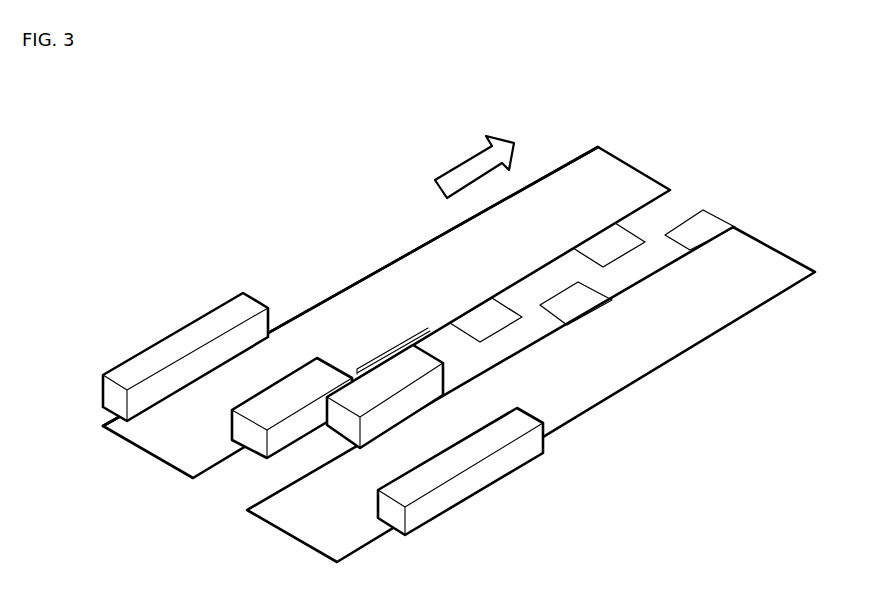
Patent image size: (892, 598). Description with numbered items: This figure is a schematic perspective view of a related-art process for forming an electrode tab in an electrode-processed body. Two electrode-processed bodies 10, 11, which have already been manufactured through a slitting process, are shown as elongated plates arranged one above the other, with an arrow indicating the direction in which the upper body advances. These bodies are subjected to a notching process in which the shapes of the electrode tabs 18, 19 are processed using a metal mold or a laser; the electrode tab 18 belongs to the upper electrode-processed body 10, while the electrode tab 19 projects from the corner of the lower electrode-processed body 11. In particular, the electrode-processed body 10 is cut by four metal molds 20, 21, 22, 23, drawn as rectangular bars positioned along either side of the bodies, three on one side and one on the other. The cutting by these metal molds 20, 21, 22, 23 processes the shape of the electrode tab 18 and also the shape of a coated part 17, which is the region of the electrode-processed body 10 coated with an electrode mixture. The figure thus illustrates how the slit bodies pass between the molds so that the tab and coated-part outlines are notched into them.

The electrode-processed body 10 is at (617, 173).
The electrode-processed body 11 is at (768, 267).
The coated part 17 is at (362, 310).
The electrode tab 18 is at (632, 243).
The electrode tab 19 is at (703, 226).
The metal mold 20 is at (113, 395).
The metal mold 21 is at (255, 440).
The metal mold 22 is at (340, 418).
The metal mold 23 is at (393, 513).